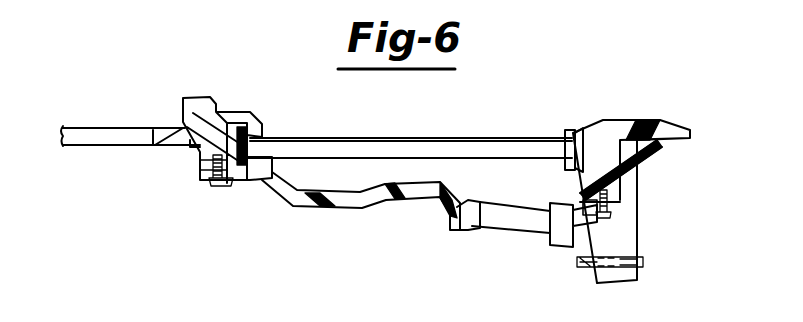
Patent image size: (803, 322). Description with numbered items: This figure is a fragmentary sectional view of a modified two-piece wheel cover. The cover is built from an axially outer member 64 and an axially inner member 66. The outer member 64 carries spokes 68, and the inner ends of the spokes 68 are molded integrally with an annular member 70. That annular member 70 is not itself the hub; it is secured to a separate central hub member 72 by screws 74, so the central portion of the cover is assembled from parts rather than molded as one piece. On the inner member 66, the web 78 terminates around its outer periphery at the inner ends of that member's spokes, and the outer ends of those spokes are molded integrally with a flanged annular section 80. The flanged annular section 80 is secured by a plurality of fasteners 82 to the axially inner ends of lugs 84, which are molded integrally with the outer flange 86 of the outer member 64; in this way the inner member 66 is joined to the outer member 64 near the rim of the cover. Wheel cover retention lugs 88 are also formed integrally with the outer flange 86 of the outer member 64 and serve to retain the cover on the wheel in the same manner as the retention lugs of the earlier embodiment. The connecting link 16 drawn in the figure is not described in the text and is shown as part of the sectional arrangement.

The connecting link 16 is at (518, 229).
The axially outer member 64 is at (581, 114).
The axially inner member 66 is at (457, 246).
The spokes 68 is at (500, 106).
The annular member 70 is at (251, 147).
The central hub member 72 is at (220, 117).
The screws 74 is at (224, 192).
The web 78 is at (351, 209).
The flanged annular section 80 is at (579, 199).
The fasteners 82 is at (603, 223).
The lugs 84 is at (610, 178).
The outer flange 86 is at (632, 124).
The wheel cover retention lugs 88 is at (627, 247).